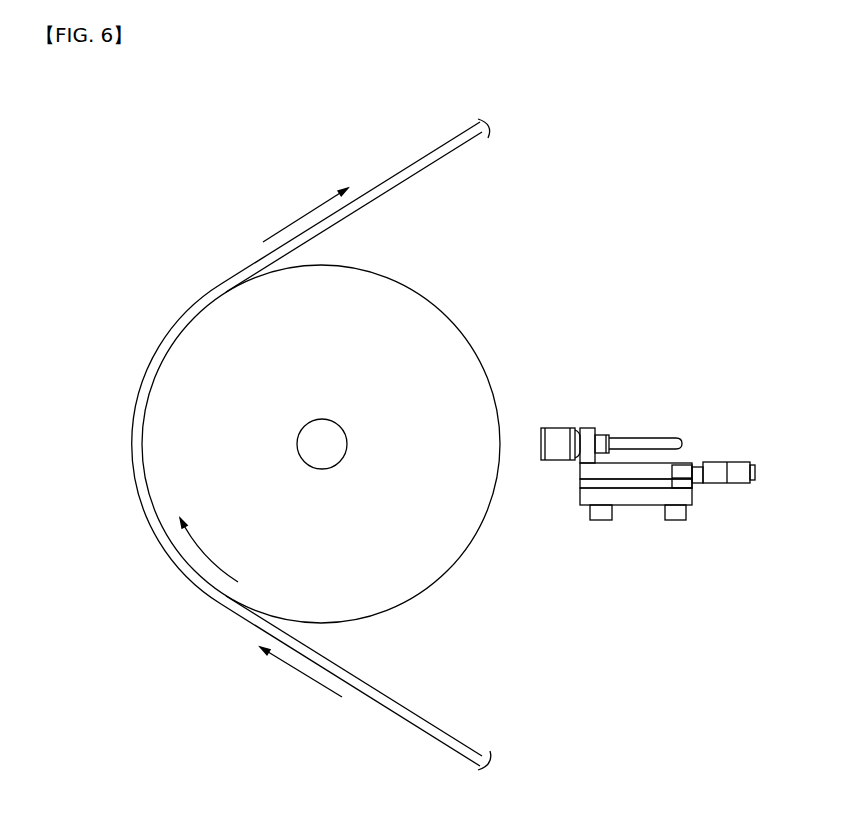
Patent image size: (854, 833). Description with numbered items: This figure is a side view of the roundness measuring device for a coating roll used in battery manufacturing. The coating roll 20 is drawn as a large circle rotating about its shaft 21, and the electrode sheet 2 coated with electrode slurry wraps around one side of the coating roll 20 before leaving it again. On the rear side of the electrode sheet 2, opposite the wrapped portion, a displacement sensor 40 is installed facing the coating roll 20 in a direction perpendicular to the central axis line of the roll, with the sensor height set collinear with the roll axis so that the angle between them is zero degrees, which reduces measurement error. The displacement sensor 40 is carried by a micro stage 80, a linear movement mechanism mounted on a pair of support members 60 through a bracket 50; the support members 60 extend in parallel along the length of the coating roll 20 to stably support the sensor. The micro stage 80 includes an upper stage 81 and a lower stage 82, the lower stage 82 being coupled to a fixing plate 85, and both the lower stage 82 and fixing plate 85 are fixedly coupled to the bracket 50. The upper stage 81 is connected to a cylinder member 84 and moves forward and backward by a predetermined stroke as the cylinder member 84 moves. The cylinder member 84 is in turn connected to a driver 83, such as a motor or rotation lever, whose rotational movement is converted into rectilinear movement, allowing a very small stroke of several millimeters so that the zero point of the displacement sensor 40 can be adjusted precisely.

The electrode sheet 2 is at (403, 708).
The coating roll 20 is at (440, 312).
The shaft 21 is at (332, 455).
The displacement sensor 40 is at (556, 435).
The bracket 50 is at (693, 498).
The support member 60 is at (603, 520).
The micro stage 80 is at (766, 427).
The upper stage 81 is at (580, 469).
The lower stage 82 is at (584, 484).
The driver 83 is at (732, 462).
The cylinder member 84 is at (680, 464).
The fixing plate 85 is at (695, 483).